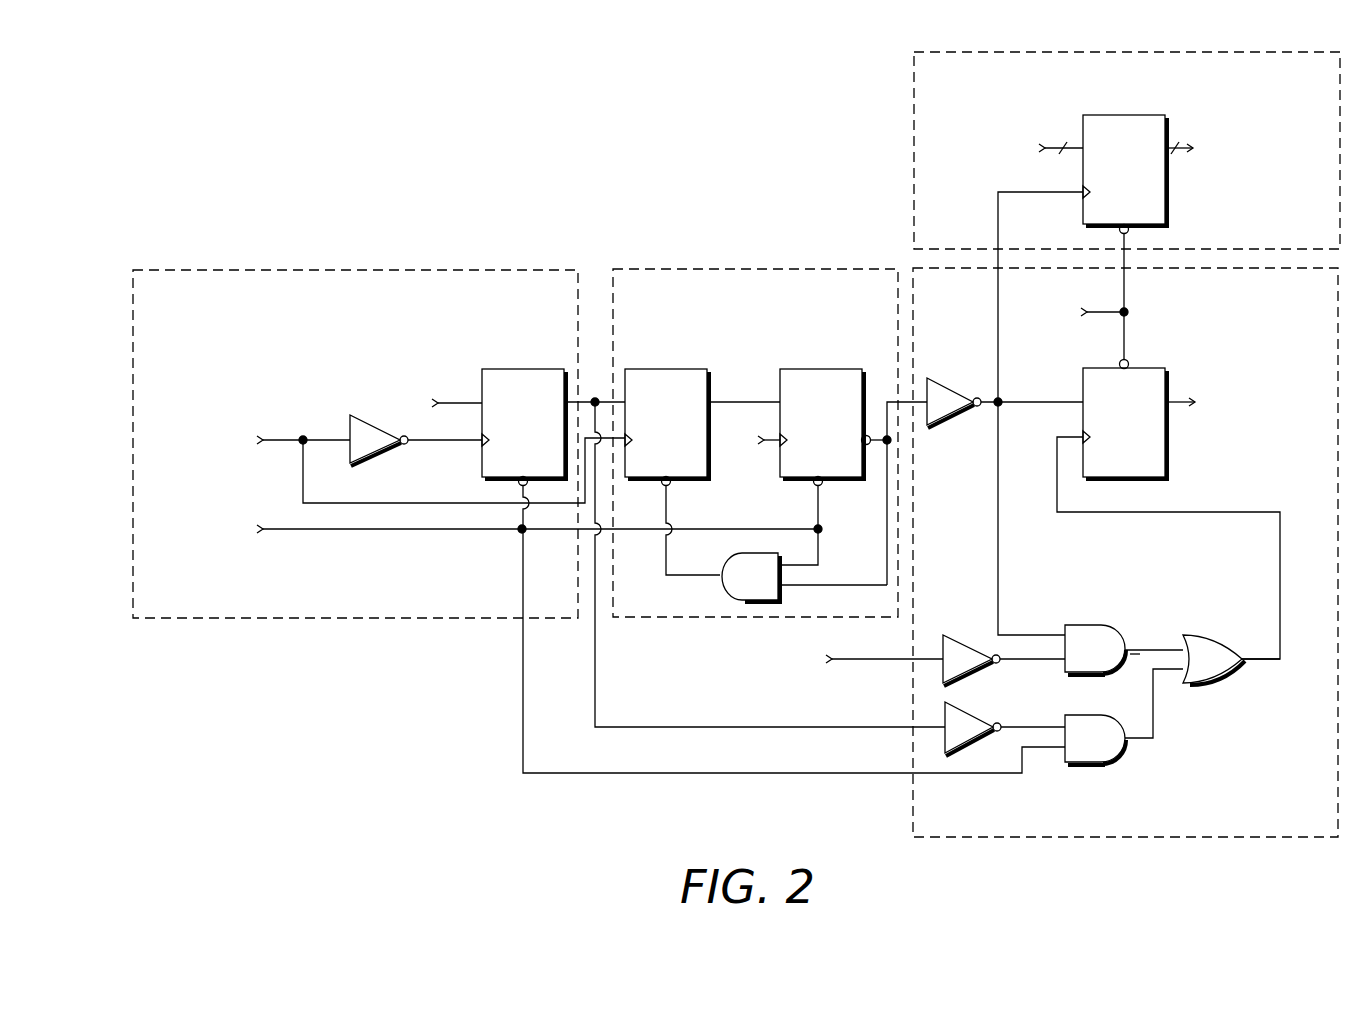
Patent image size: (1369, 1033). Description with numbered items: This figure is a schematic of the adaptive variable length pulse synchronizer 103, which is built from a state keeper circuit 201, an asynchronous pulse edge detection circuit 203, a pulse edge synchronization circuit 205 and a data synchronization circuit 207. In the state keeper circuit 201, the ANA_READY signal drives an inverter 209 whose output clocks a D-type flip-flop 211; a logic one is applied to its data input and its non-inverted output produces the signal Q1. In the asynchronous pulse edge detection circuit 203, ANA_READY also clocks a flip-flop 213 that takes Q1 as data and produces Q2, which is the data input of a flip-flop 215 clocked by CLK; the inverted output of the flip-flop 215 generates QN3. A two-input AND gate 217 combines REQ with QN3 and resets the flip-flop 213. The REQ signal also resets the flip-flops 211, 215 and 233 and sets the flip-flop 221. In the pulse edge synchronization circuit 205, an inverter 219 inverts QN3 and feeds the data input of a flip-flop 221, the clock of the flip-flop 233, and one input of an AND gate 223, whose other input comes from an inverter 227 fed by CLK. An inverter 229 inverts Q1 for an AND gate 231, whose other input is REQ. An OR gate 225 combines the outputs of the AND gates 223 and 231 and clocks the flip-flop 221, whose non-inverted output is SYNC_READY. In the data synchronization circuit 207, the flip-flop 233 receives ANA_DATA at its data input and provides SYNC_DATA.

The adaptive variable length pulse synchronizer 103 is at (446, 176).
The state keeper circuit 201 is at (172, 320).
The asynchronous pulse edge detection circuit 203 is at (820, 320).
The pulse edge synchronization circuit 205 is at (1330, 830).
The data synchronization circuit 207 is at (1240, 81).
The inverter 209 is at (371, 418).
The D-type flip-flop 211 is at (510, 393).
The D-type flip-flop 213 is at (653, 393).
The D-type flip-flop 215 is at (808, 393).
The two-input AND gate 217 is at (737, 586).
The inverter 219 is at (935, 381).
The D-type flip-flop 221 is at (1111, 471).
The two-input AND gate 223 is at (1079, 656).
The two-input OR gate 225 is at (1199, 666).
The inverter 227 is at (955, 634).
The inverter 229 is at (974, 712).
The two-input AND gate 231 is at (1079, 746).
The D-type flip-flop 233 is at (1111, 140).